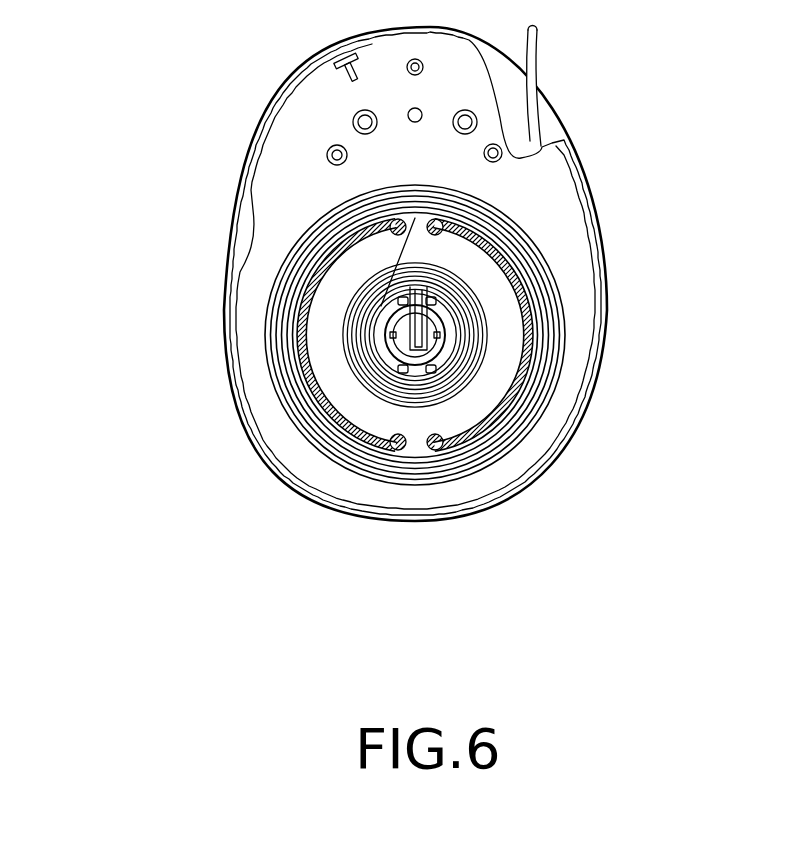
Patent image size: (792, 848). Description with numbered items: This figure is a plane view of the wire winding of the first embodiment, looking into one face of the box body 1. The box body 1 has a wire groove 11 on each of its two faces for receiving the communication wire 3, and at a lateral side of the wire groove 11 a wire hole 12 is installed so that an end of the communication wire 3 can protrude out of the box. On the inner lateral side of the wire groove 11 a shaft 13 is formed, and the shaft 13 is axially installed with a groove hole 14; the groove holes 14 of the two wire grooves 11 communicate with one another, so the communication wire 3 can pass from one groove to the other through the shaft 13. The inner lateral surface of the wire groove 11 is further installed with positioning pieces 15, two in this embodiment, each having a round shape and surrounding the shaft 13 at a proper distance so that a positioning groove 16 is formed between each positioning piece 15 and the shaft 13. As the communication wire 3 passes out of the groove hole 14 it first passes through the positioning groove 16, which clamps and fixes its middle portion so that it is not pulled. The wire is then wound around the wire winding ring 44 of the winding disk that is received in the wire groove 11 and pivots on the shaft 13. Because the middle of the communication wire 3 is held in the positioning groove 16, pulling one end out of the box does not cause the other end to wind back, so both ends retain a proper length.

The box body 1 is at (573, 440).
The communication wire 3 is at (280, 383).
The wire groove 11 is at (248, 320).
The wire hole 12 is at (571, 160).
The shaft 13 is at (432, 352).
The groove hole 14 is at (432, 315).
The positioning piece 15 is at (378, 336).
The positioning groove 16 is at (380, 305).
The wire winding ring 44 is at (463, 447).